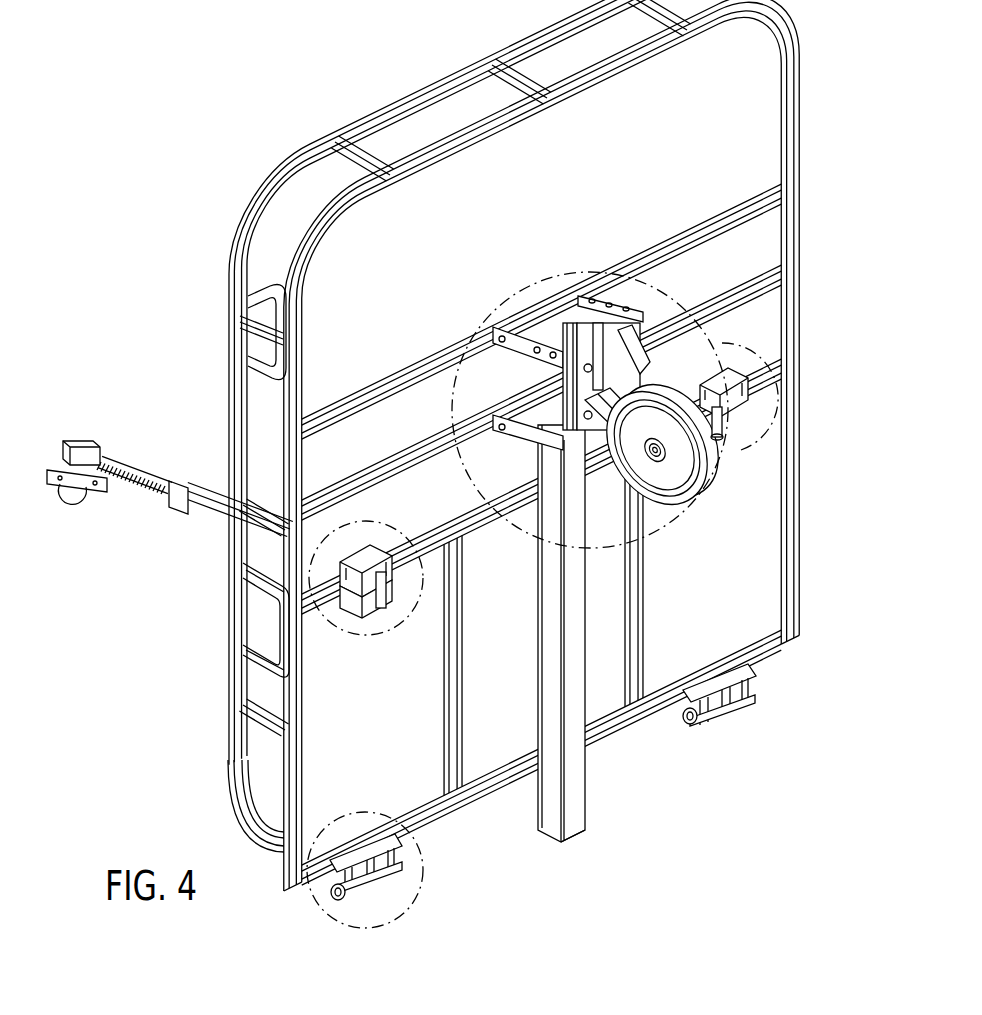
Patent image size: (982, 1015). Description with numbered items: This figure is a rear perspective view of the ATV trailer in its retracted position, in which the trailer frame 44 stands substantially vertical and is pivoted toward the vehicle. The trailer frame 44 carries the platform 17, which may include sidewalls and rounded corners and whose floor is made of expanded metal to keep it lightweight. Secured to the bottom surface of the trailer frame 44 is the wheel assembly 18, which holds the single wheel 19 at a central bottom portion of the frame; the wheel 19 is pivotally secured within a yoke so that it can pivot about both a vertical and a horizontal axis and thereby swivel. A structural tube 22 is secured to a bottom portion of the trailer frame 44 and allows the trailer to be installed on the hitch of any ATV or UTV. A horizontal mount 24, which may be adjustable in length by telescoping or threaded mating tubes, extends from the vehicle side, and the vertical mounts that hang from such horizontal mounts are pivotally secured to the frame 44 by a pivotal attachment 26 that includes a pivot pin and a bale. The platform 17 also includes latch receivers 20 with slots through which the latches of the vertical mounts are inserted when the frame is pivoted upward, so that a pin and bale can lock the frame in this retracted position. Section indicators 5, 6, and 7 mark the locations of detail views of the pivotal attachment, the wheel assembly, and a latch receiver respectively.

The section line 5- 5 is at (318, 832).
The section line 6- 6 is at (495, 309).
The section line 7- 7 is at (317, 545).
The platform 17 is at (513, 460).
The wheel assembly 18 is at (658, 512).
The wheel 19 is at (686, 490).
The latch receiver 20 is at (363, 628).
The structural tube 22 is at (545, 630).
The horizontal mount 24 is at (203, 527).
The pivotal attachment 26 is at (375, 882).
The trailer frame 44 is at (330, 603).